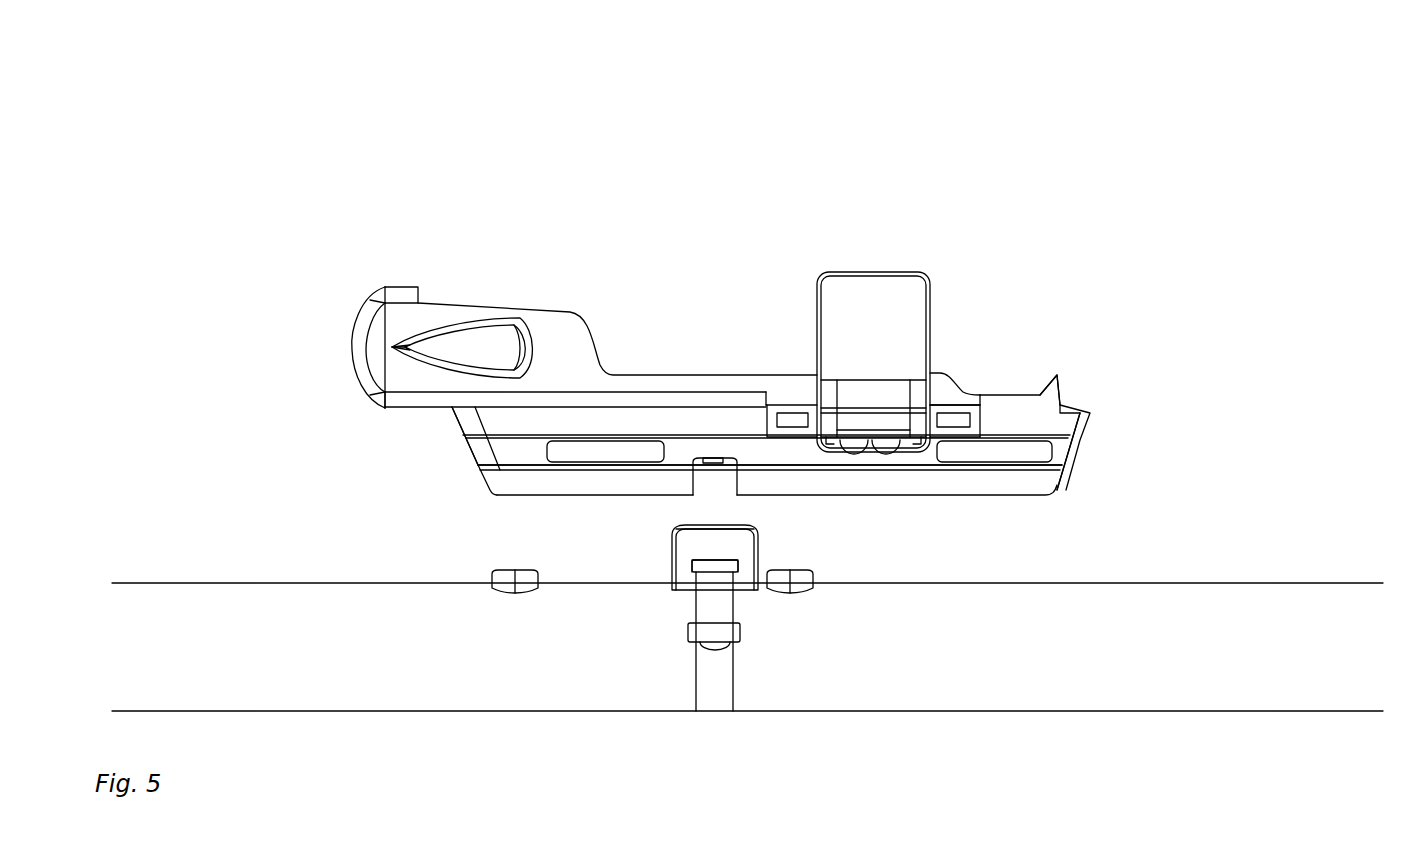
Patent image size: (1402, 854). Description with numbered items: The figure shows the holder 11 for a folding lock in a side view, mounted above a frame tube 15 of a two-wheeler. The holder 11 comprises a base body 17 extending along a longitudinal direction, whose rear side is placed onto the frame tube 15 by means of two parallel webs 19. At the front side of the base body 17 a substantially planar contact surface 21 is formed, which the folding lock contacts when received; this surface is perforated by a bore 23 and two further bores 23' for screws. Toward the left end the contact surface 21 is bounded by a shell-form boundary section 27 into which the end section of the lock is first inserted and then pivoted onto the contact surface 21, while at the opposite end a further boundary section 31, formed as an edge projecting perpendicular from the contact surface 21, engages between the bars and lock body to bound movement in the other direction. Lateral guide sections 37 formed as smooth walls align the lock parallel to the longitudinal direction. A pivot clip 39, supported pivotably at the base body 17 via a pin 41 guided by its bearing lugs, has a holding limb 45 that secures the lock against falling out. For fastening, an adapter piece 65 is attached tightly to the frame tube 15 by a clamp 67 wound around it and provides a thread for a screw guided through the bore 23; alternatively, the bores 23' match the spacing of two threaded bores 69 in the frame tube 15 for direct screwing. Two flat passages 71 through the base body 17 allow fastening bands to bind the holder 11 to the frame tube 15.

The holder 11 is at (512, 200).
The frame tube 15 is at (1255, 612).
The base body 17 is at (1032, 420).
The webs 19 is at (908, 488).
The contact surface 21 is at (1005, 388).
The bore 23 is at (715, 487).
The further bores 23' is at (747, 475).
The boundary section 27 is at (358, 347).
The further boundary section 31 is at (1052, 375).
The lateral guide sections 37 is at (455, 312).
The pivot clips 39 is at (862, 272).
The pin 41 is at (890, 420).
The holding limb 45 is at (830, 325).
The adapter piece 65 is at (700, 540).
The clamp 67 is at (716, 692).
The threaded bores 69 is at (518, 572).
The passages 71 is at (610, 450).